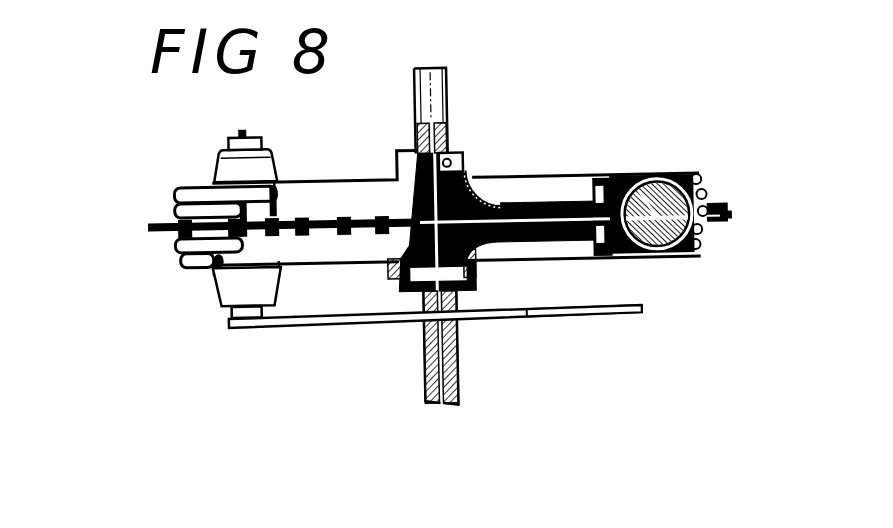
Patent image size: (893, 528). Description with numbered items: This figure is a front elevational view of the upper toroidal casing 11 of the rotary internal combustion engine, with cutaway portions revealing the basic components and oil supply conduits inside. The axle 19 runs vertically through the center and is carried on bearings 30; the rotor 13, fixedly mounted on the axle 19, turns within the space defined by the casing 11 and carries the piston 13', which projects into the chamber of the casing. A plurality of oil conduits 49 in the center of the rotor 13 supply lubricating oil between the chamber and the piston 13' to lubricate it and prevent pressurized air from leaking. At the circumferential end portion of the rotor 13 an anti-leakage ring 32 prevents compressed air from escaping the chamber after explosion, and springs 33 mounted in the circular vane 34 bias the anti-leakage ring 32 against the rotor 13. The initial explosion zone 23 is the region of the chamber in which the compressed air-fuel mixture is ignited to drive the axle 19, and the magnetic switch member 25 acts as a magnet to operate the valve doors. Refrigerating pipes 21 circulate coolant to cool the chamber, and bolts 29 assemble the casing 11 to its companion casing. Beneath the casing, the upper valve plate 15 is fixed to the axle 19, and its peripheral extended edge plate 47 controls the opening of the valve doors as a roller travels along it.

The upper toroidal casing 11 is at (510, 265).
The rotor 13 is at (506, 206).
The piston 13' is at (656, 189).
The upper valve plate 15 is at (498, 317).
The axle 19 is at (451, 83).
The refrigerating pipes 21 is at (170, 195).
The initial explosion zone 23 is at (225, 168).
The magnetic switch member 25 is at (246, 128).
The bolts 29 is at (320, 210).
The bearings 30 is at (465, 162).
The anti-leakage rings 32 is at (620, 245).
The springs 33 is at (608, 262).
The circular vane 34 is at (604, 180).
The extended edge plate 47 is at (565, 317).
The oil conduits 49 is at (452, 143).